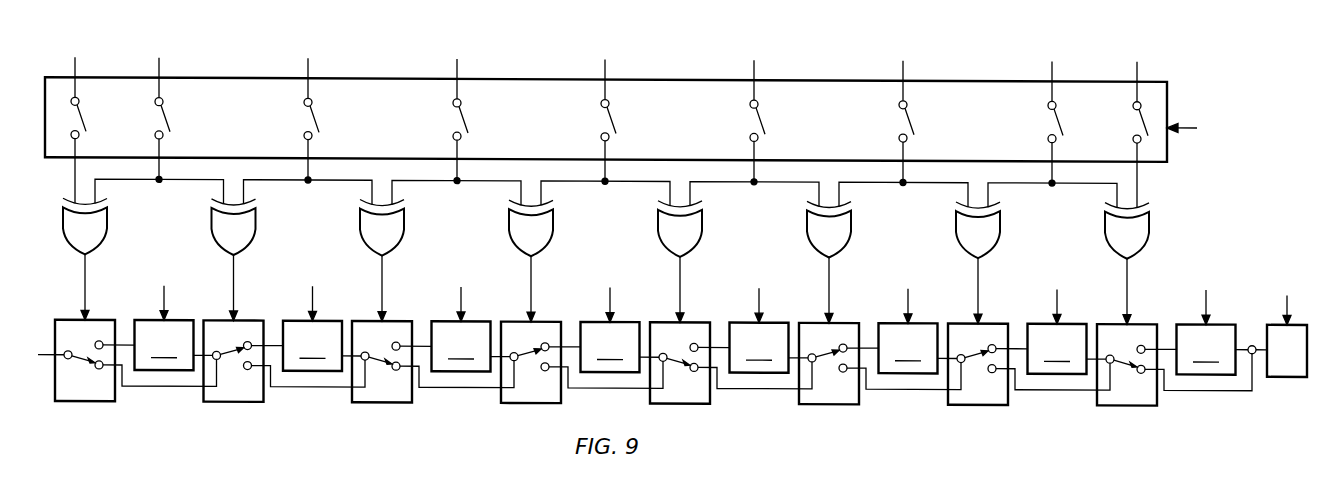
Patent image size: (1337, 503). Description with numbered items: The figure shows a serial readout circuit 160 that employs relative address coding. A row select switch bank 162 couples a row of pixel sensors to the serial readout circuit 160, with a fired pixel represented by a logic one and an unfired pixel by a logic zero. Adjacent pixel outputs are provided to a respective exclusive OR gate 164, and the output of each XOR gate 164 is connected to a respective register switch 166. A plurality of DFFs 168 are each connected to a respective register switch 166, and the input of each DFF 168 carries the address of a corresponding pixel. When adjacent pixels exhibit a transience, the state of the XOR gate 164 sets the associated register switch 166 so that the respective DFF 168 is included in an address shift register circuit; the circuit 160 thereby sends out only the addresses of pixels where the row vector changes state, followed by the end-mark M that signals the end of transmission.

The serial readout circuit 160 is at (1203, 73).
The row select switch bank 162 is at (815, 78).
The exclusive OR (XOR) gate 164 is at (107, 222).
The register switch 166 is at (79, 401).
The DFF 168 is at (1287, 372).